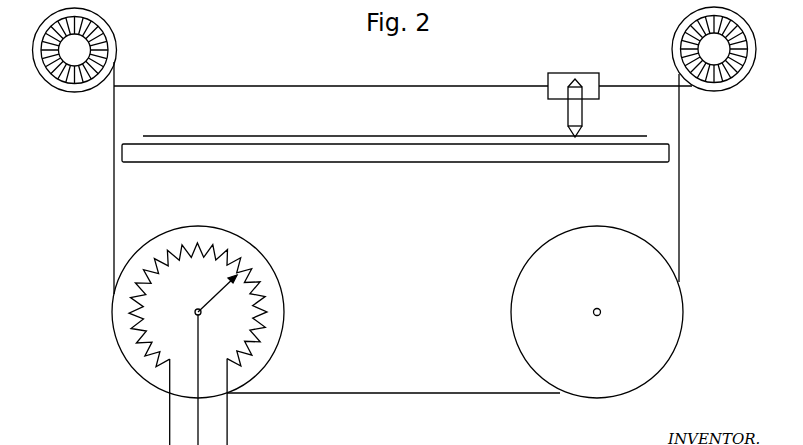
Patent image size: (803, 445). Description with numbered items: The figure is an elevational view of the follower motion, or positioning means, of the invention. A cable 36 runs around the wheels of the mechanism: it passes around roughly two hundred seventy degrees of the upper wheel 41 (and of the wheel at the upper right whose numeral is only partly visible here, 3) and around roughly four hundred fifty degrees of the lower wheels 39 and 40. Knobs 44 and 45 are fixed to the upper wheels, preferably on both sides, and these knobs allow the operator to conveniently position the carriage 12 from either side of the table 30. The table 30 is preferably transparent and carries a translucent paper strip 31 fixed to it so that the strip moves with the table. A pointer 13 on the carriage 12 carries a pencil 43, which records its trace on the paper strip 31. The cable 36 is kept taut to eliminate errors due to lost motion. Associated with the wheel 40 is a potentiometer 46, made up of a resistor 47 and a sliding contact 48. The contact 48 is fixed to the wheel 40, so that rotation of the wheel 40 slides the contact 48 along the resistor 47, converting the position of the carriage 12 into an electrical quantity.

The wheel 41 is at (45, 23).
The knob 45 is at (74, 50).
The knob 44 is at (714, 49).
The take-up roll 3 is at (750, 25).
The cable 36 is at (355, 86).
The pointer 13 is at (571, 80).
The carriage 12 is at (584, 73).
The pencil 43 is at (583, 113).
The translucent paper strip 31 is at (400, 137).
The table 30 is at (460, 163).
The wheel 40 is at (258, 250).
The potentiometer 46 is at (178, 331).
The resistor 47 is at (248, 318).
The sliding contact 48 is at (216, 292).
The wheel 39 is at (540, 247).